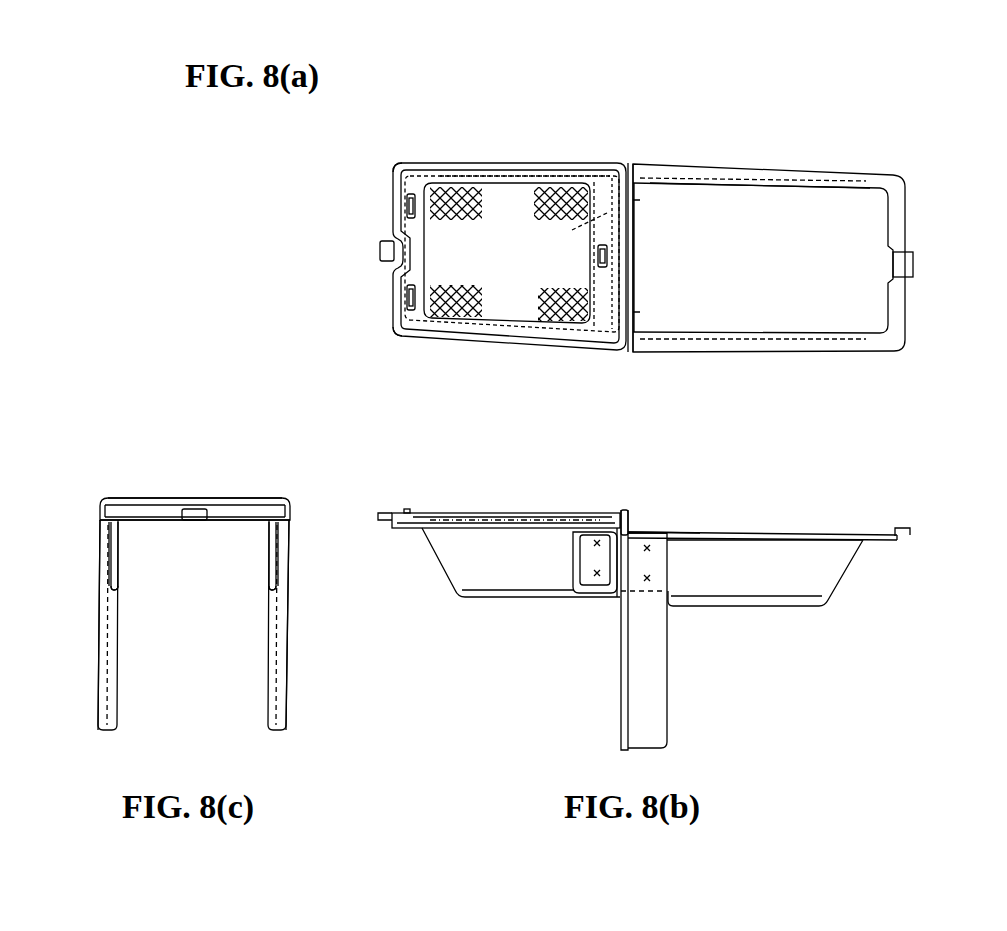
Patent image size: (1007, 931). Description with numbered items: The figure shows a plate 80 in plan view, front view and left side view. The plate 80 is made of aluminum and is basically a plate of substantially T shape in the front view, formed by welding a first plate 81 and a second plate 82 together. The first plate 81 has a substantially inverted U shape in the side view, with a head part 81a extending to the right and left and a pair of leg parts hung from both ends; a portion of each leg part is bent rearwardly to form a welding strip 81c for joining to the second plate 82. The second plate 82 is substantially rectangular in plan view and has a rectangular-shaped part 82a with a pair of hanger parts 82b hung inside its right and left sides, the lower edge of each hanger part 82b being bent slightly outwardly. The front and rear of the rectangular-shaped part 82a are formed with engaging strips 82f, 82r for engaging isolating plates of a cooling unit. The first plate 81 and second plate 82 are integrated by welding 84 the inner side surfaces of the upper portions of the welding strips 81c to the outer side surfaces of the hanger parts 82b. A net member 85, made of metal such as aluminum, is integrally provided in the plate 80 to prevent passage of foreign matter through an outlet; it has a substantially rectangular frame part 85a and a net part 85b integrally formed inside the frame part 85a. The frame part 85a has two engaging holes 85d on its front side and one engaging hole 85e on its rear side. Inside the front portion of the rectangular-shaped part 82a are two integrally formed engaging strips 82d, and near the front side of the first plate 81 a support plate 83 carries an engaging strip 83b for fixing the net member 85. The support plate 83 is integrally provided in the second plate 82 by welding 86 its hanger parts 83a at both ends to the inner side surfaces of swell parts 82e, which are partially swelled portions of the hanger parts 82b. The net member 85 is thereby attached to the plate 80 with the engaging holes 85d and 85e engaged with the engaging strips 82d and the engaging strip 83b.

In FIG. 8a, the plate 80 is at (826, 360).
In FIG. 8a, the first plate 81 is at (640, 288).
In FIG. 8a, the head part 81a is at (636, 227).
In FIG. 8a, the welding strip 81c is at (660, 177).
In FIG. 8a, the second plate 82 is at (720, 354).
In FIG. 8a, the rectangular-shaped part 82a is at (803, 178).
The rectangular-shaped part 82a is at (472, 531).
In FIG. 8a, the hanger part 82b is at (500, 168).
In FIG. 8a, the engaging strip 82d is at (407, 206).
The engaging strip 82d is at (408, 510).
In FIG. 8a, the swell part 82e is at (598, 170).
In FIG. 8a, the engaging strip 82f is at (378, 258).
In FIG. 8a, the engaging strip 82r is at (913, 271).
The engaging strip 82r is at (910, 528).
In FIG. 8a, the support plate 83 is at (579, 229).
In FIG. 8a, the hanger part 83a is at (636, 206).
In FIG. 8a, the engaging strip 83b is at (598, 256).
The engaging strip 83b is at (601, 517).
The welding 84 is at (648, 578).
In FIG. 8a, the net member 85 is at (495, 178).
In FIG. 8a, the frame part 85a is at (468, 173).
The frame part 85a is at (397, 512).
In FIG. 8a, the net part 85b is at (452, 200).
The net part 85b is at (473, 519).
In FIG. 8a, the engaging hole 85d is at (398, 167).
In FIG. 8a, the engaging hole 85e is at (606, 253).
The welding 86 is at (596, 573).